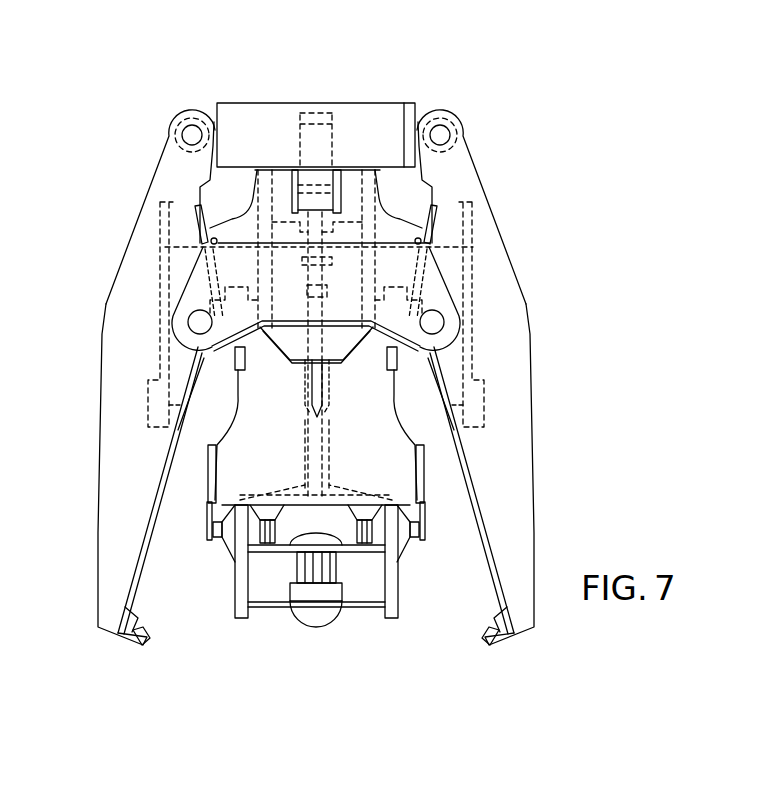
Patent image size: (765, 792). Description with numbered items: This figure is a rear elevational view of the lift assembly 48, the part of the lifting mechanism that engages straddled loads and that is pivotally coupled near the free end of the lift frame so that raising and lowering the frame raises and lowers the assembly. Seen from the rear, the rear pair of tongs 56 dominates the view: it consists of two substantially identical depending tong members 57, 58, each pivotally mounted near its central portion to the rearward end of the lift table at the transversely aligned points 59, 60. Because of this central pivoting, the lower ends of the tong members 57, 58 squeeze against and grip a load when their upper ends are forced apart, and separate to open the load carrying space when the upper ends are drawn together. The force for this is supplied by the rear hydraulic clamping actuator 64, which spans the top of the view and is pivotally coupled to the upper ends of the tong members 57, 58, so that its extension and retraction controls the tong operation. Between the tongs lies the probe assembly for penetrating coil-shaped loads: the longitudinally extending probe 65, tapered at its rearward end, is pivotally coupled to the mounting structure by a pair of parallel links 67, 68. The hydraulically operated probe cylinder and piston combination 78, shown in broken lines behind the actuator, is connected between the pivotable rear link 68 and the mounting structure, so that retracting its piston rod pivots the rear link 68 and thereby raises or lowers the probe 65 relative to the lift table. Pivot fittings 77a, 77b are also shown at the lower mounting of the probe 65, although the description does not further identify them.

The lift assembly 48 is at (206, 58).
The rear hydraulic clamping actuator 64 is at (363, 112).
The probe cylinder and piston combination 78 is at (302, 128).
The tong member 57 is at (128, 266).
The tong member 58 is at (497, 250).
The pivot point 59 is at (192, 323).
The pivot point 60 is at (442, 325).
The rear pair of tongs 56 is at (107, 386).
The parallel link 67 is at (316, 393).
The rear link 68 is at (243, 462).
The left pivot plate 77a is at (207, 530).
The right pivot plate 77b is at (428, 528).
The probe 65 is at (360, 592).